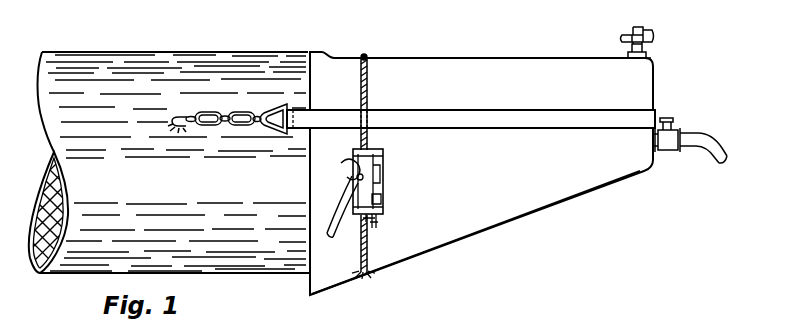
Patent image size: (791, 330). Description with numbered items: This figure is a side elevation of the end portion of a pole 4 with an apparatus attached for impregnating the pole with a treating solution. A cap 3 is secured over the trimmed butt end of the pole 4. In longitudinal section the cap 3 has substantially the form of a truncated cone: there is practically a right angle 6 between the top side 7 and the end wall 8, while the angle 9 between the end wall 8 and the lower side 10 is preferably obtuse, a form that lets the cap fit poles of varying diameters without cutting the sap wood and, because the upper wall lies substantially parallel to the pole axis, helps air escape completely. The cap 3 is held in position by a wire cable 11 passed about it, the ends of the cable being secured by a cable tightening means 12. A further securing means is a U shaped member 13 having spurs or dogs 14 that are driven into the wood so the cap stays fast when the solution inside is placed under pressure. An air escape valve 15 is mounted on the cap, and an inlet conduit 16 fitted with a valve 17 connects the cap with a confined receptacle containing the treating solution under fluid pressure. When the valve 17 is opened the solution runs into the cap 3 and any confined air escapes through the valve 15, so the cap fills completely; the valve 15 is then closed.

The cap 3 is at (568, 205).
The pole 4 is at (153, 78).
The angle 6 is at (613, 61).
The side 7 is at (518, 56).
The end wall 8 is at (656, 71).
The angle 9 is at (646, 135).
The side 10 is at (427, 254).
The wire cable 11 is at (372, 97).
The cable tightening means 12 is at (387, 178).
The U shaped member 13 is at (552, 113).
The spurs or dogs 14 is at (182, 131).
The air escape valve 15 is at (621, 35).
The inlet conduit 16 is at (707, 139).
The valve 17 is at (667, 153).